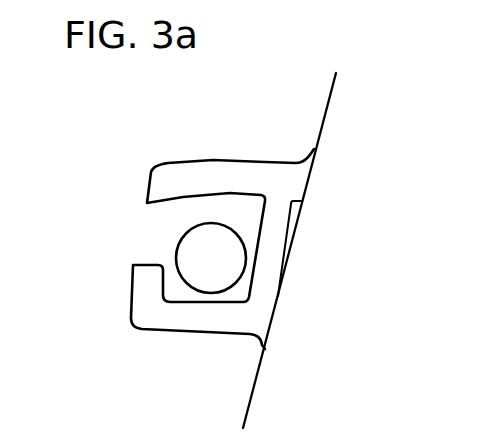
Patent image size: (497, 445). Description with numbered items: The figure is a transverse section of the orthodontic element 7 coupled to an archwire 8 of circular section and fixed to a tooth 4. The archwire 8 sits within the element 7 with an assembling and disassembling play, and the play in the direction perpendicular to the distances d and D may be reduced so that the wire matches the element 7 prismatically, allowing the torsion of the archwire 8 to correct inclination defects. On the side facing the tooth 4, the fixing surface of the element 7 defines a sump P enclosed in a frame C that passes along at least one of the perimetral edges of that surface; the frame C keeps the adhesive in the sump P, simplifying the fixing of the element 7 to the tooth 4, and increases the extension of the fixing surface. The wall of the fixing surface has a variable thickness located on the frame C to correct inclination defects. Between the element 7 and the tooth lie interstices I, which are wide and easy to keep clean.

The tooth 4 is at (330, 96).
The element 7 is at (220, 158).
The archwire 8 is at (188, 242).
The sump P is at (293, 232).
The frame C is at (262, 343).
The interstices I is at (330, 131).
The distance d is at (143, 203).
The distance D is at (283, 303).